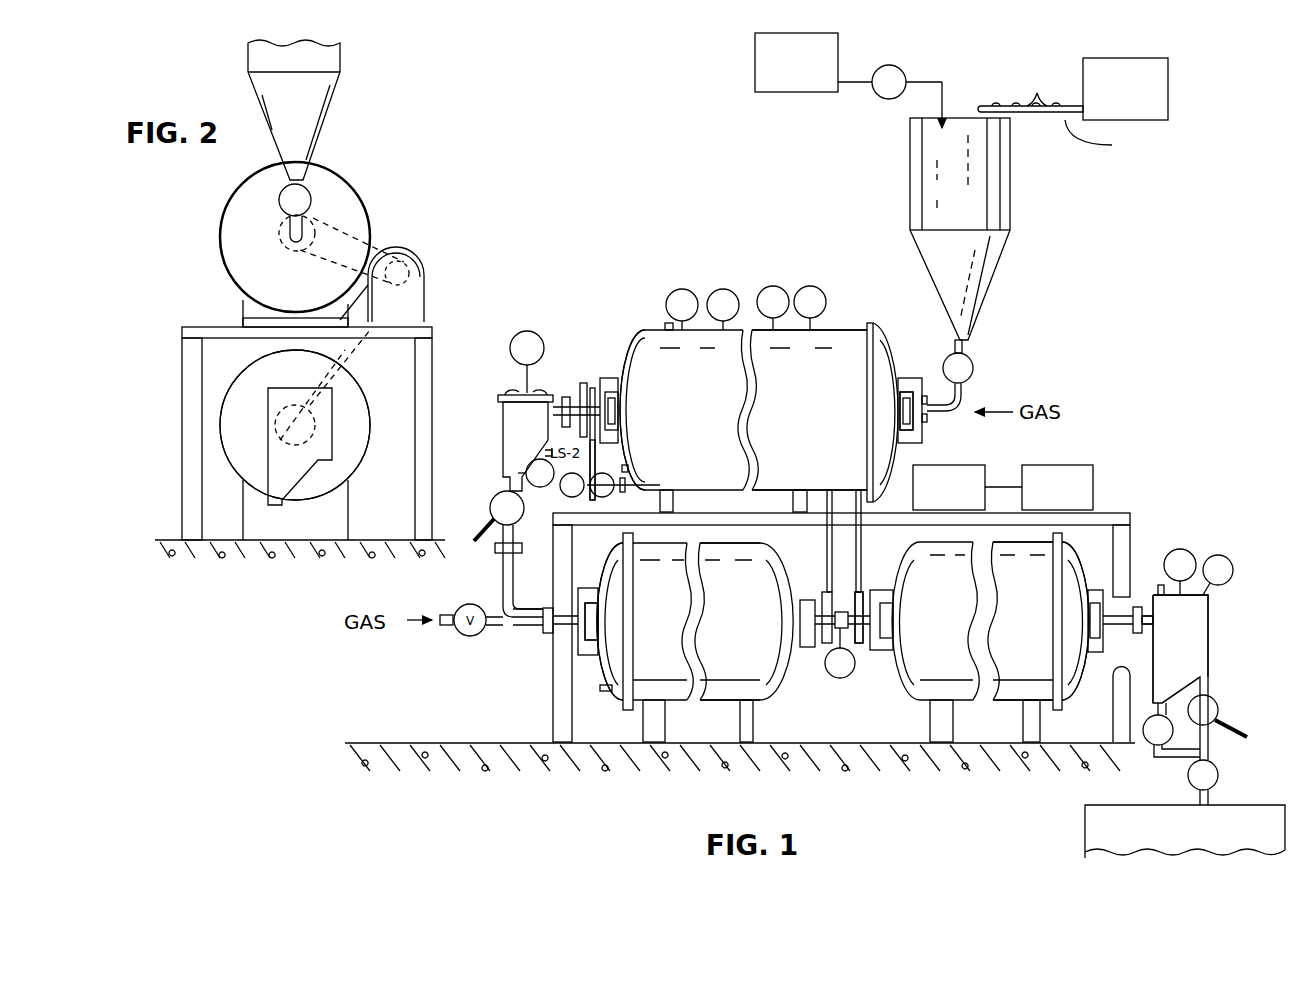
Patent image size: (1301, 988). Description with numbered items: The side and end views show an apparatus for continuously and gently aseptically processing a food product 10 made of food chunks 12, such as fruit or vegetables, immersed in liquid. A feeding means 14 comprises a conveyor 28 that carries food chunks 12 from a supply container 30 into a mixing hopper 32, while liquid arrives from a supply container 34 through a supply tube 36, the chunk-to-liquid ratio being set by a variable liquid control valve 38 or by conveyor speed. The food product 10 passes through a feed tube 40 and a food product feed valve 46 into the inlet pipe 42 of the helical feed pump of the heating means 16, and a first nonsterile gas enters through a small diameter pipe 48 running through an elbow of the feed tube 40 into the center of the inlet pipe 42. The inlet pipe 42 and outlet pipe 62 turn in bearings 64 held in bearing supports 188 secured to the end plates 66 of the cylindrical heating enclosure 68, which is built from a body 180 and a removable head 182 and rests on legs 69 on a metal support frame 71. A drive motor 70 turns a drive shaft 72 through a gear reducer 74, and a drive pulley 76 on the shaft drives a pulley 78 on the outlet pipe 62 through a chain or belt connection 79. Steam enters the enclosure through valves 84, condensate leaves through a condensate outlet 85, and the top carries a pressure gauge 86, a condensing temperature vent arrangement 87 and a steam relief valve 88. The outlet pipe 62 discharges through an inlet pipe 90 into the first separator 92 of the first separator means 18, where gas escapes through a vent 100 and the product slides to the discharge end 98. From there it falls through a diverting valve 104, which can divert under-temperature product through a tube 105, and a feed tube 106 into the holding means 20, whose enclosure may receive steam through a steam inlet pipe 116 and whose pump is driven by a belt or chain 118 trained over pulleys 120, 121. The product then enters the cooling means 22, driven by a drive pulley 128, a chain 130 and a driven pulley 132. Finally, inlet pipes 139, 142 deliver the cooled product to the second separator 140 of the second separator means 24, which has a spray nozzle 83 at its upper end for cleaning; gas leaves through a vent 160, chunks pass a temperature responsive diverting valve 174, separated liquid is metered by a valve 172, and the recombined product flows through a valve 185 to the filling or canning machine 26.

In FIG. 1, the food product 10 is at (985, 266).
In FIG. 1, the food chunks 12 is at (1038, 95).
In FIG. 1, the food product feeding means 14 is at (960, 74).
In FIG. 1, the food product heating means 16 is at (750, 297).
In FIG. 2, the food product heating means 16 is at (343, 166).
In FIG. 1, the first separator means 18 is at (494, 366).
In FIG. 1, the holding means 20 is at (580, 673).
In FIG. 1, the cooling means 22 is at (895, 700).
In FIG. 2, the cooling means 22 is at (216, 482).
In FIG. 1, the second separator means 24 is at (1245, 585).
In FIG. 2, the second separator means 24 is at (258, 397).
In FIG. 1, the filling or canning machine 26 is at (1085, 840).
In FIG. 1, the conveyor 28 is at (1112, 145).
In FIG. 1, the supply container 30 is at (1170, 95).
In FIG. 1, the mixing hopper 32 is at (993, 212).
In FIG. 2, the mixing hopper 32 is at (333, 108).
In FIG. 1, the supply container 34 is at (755, 62).
In FIG. 1, the supply tube 36 is at (858, 85).
In FIG. 1, the variable liquid control valve 38 is at (891, 65).
In FIG. 1, the feed tube 40 is at (967, 350).
In FIG. 2, the feed tube 40 is at (340, 207).
In FIG. 1, the inlet pipe 42 is at (868, 411).
In FIG. 1, the food product feed valve 46 is at (975, 368).
In FIG. 2, the food product feed valve 46 is at (282, 187).
In FIG. 1, the small diameter pipe 48 is at (963, 402).
In FIG. 1, the outlet pipe 62 is at (643, 404).
In FIG. 1, the bearings 64 is at (897, 425).
In FIG. 1, the end plates 66 is at (773, 398).
In FIG. 1, the cylindrical heating enclosure 68 is at (809, 383).
In FIG. 1, the legs 69 is at (733, 502).
In FIG. 2, the legs 69 is at (273, 301).
In FIG. 1, the drive motor 70 is at (1080, 465).
In FIG. 2, the drive motor 70 is at (425, 286).
In FIG. 1, the metal support frame 71 is at (1123, 512).
In FIG. 2, the metal support frame 71 is at (206, 331).
In FIG. 1, the drive shaft 72 is at (1003, 470).
In FIG. 2, the drive shaft 72 is at (410, 258).
In FIG. 1, the gear reducer 74 is at (950, 465).
In FIG. 1, the drive pulley 76 is at (625, 470).
In FIG. 1, the pulley 78 is at (583, 383).
In FIG. 2, the pulley 78 is at (316, 225).
In FIG. 1, the chain or belt connection 79 is at (600, 470).
In FIG. 2, the chain or belt connection 79 is at (378, 232).
In FIG. 1, the fitting 83 is at (1158, 583).
In FIG. 1, the valves 84 is at (580, 497).
In FIG. 1, the condensate outlet 85 is at (645, 477).
In FIG. 1, the pressure gauge 86 is at (723, 288).
In FIG. 1, the condensing temperature vent arrangement 87 is at (788, 290).
In FIG. 1, the steam relief valve 88 is at (825, 292).
In FIG. 1, the inlet pipe 90 is at (561, 393).
In FIG. 1, the first separator 92 is at (503, 418).
In FIG. 1, the discharge end 98 is at (503, 470).
In FIG. 1, the vent 100 is at (540, 338).
In FIG. 1, the food product diverting valve 104 is at (490, 492).
In FIG. 1, the tube 105 is at (485, 524).
In FIG. 1, the feed tube 106 is at (503, 577).
In FIG. 1, the steam inlet pipe 116 is at (612, 692).
In FIG. 1, the belt or chain 118 is at (826, 545).
In FIG. 1, the pulley 120 is at (817, 487).
In FIG. 1, the pulley 121 is at (818, 650).
In FIG. 1, the drive pulley 128 is at (852, 489).
In FIG. 1, the chain 130 is at (863, 556).
In FIG. 2, the chain 130 is at (359, 367).
In FIG. 1, the driven pulley 132 is at (860, 650).
In FIG. 1, the inlet pipe 139 is at (1128, 633).
In FIG. 1, the second separator 140 is at (1208, 633).
In FIG. 2, the second separator 140 is at (335, 418).
In FIG. 1, the inlet pipe 142 is at (1169, 622).
In FIG. 1, the vent 160 is at (1190, 553).
In FIG. 1, the valve 172 is at (1152, 745).
In FIG. 1, the temperature responsive diverting valve 174 is at (1218, 700).
In FIG. 1, the body 180 is at (785, 395).
In FIG. 1, the head 182 is at (890, 394).
In FIG. 2, the head 182 is at (273, 237).
In FIG. 1, the valve 185 is at (1220, 774).
In FIG. 1, the bearing supports 188 is at (763, 371).